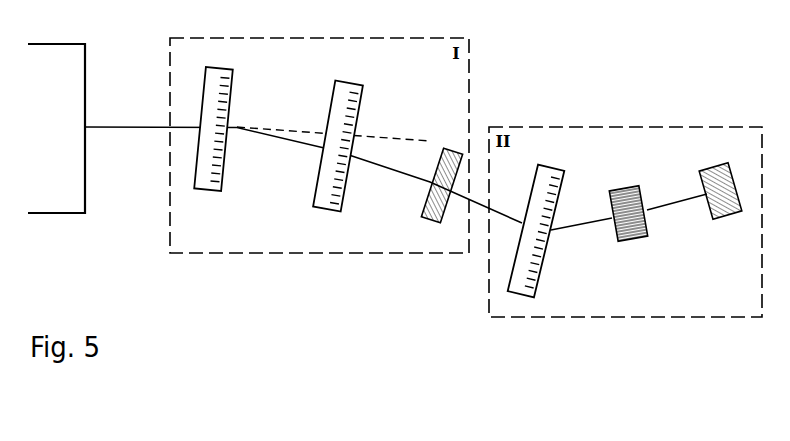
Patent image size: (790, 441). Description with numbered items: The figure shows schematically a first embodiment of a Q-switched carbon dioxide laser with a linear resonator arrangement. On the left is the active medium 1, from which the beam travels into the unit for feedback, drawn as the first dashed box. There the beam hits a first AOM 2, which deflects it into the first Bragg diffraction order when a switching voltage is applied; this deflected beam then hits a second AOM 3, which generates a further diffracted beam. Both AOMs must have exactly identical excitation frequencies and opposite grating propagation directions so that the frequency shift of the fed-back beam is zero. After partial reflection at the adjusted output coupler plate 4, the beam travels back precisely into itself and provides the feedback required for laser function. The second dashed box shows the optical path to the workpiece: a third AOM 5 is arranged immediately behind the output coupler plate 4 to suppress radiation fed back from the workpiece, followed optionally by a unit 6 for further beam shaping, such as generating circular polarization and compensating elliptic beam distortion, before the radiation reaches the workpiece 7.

The active medium 1 is at (60, 201).
The first AOM 2 is at (207, 195).
The second AOM 3 is at (327, 210).
The output coupler plate 4 is at (432, 220).
The third AOM 5 is at (543, 165).
The unit for further beam shaping 6 is at (620, 187).
The workpiece 7 is at (710, 170).